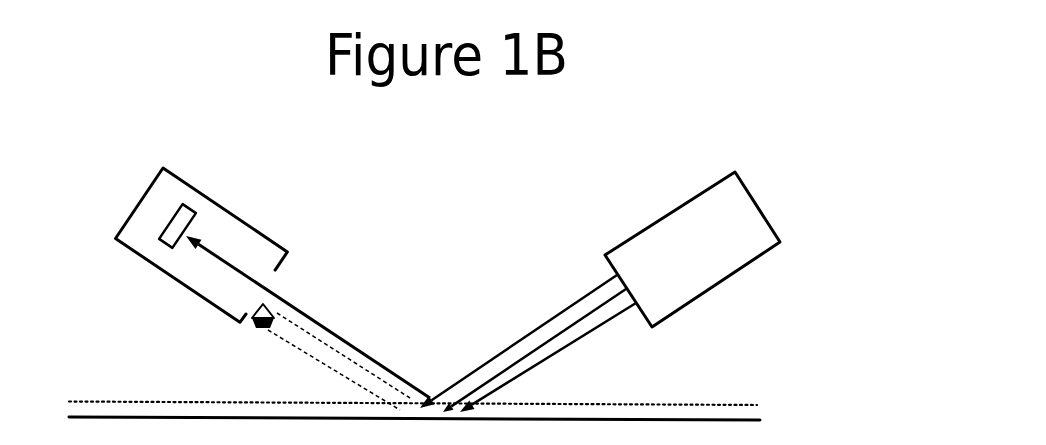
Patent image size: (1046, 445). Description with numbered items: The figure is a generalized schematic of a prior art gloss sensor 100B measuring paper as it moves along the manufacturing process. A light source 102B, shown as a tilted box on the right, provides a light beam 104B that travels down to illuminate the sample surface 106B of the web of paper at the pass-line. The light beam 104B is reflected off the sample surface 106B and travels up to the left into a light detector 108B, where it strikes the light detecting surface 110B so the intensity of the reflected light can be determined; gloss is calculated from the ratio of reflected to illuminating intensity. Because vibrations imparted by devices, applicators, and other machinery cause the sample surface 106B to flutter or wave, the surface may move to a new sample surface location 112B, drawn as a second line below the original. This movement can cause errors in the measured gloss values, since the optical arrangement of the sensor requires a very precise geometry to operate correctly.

The sensor 100B is at (740, 107).
The light source 102B is at (654, 219).
The light beam 104B is at (526, 323).
The sample surface 106B is at (684, 397).
The light detector 108B is at (273, 287).
The light detecting surface 110B is at (204, 203).
The new sample surface location 112B is at (768, 406).